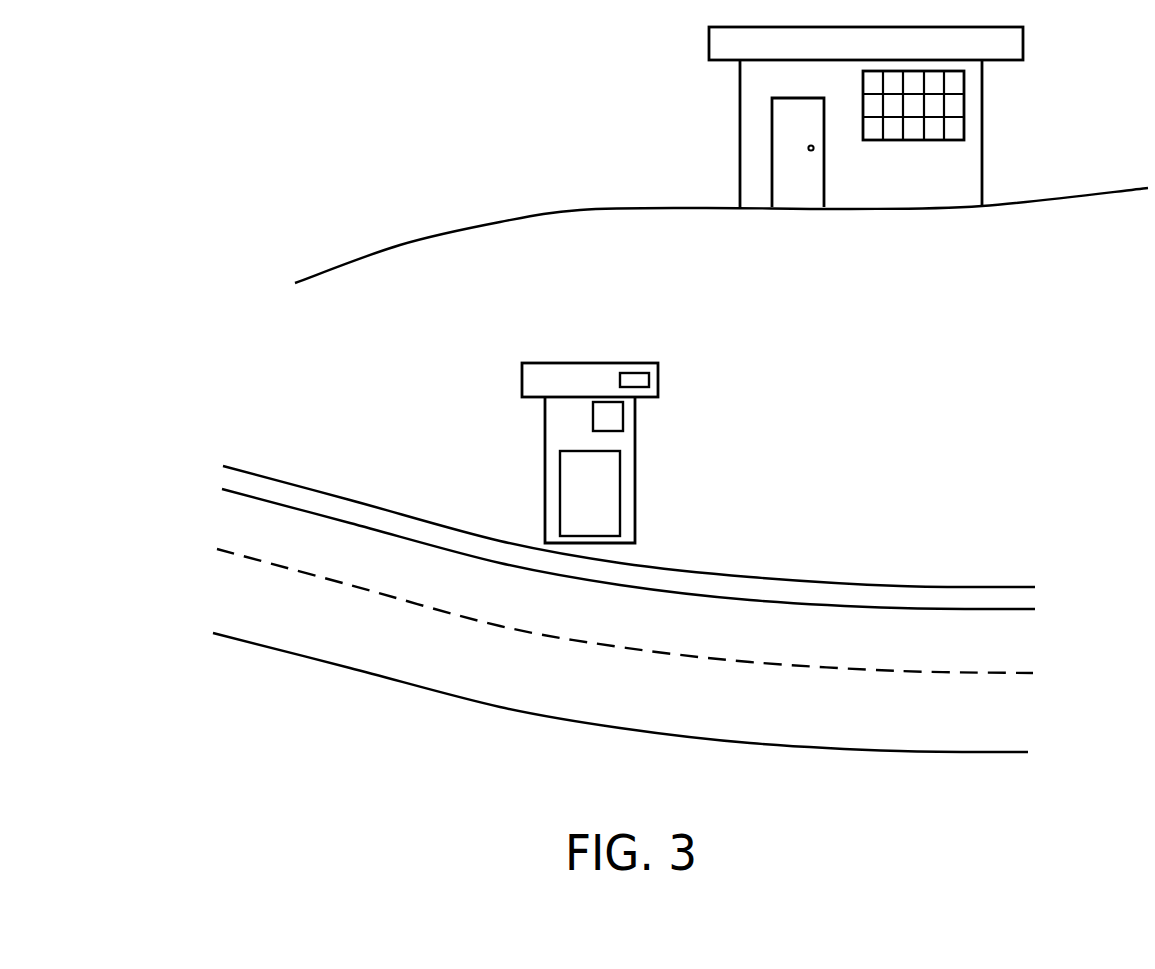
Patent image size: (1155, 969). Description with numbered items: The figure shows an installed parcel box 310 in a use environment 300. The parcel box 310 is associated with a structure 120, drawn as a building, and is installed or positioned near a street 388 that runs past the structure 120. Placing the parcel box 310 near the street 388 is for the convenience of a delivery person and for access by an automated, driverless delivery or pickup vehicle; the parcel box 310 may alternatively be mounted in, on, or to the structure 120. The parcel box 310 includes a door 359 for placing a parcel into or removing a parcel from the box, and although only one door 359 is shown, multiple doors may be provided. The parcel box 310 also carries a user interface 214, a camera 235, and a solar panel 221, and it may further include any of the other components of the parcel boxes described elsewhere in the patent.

The use environment 300 is at (274, 120).
The structure 120 is at (992, 112).
The parcel box 310 is at (590, 417).
The solar panel 221 is at (553, 363).
The camera 235 is at (637, 378).
The user interface 214 is at (623, 423).
The door 359 is at (620, 503).
The street 388 is at (870, 644).